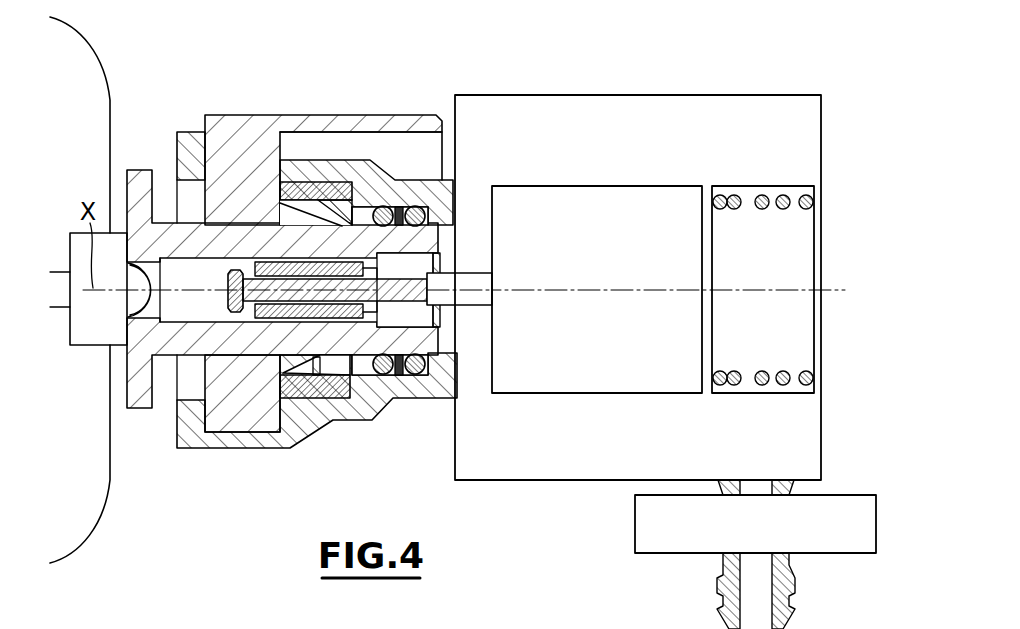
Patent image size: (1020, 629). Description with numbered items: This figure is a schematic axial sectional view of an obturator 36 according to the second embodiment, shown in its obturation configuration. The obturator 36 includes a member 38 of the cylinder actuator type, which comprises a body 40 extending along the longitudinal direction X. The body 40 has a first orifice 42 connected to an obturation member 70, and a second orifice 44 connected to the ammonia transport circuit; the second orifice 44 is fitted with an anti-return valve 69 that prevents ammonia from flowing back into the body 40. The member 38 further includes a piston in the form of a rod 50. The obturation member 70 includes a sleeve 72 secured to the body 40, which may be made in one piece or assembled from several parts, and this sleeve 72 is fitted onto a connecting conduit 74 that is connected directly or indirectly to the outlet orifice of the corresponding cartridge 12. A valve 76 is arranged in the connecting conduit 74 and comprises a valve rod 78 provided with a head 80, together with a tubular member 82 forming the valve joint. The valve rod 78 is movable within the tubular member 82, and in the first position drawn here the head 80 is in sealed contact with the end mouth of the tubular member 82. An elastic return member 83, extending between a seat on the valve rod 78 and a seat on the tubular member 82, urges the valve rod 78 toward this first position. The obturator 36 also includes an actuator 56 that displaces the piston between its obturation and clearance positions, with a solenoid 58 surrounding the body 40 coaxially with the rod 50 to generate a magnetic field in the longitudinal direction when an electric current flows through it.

The cartridge 12 is at (120, 86).
The obturator 36 is at (832, 130).
The member 38 is at (578, 197).
The body 40 is at (663, 197).
The first orifice 42 is at (472, 263).
The second orifice 44 is at (763, 467).
The rod 50 is at (437, 400).
The actuator 56 is at (711, 124).
The solenoid 58 is at (636, 112).
The anti-return valve 69 is at (657, 526).
The obturation member 70 is at (270, 93).
The sleeve 72 is at (345, 103).
The connecting conduit 74 is at (170, 358).
The valve 76 is at (305, 352).
The valve rod 78 is at (332, 397).
The head 80 is at (203, 400).
The tubular member 82 is at (283, 340).
The elastic return member 83 is at (413, 376).